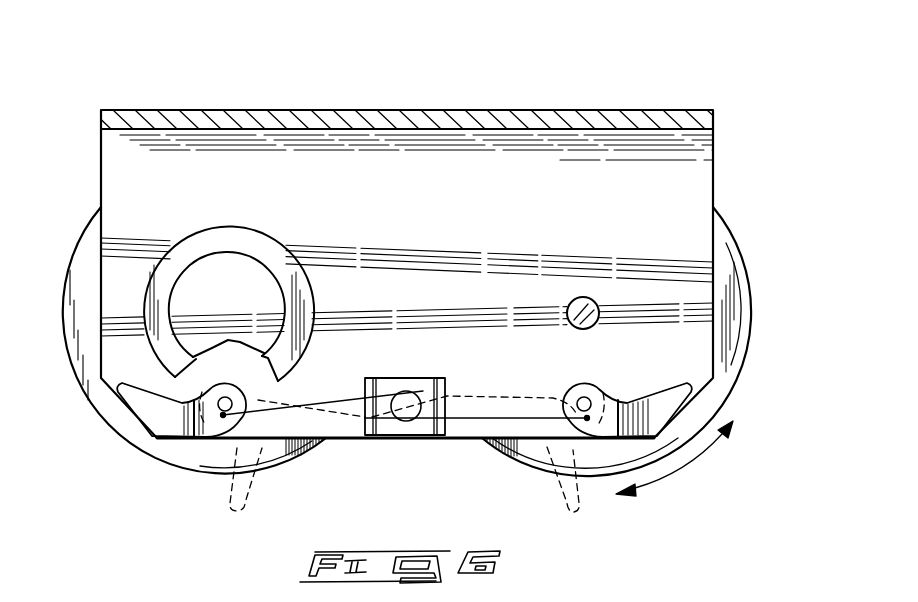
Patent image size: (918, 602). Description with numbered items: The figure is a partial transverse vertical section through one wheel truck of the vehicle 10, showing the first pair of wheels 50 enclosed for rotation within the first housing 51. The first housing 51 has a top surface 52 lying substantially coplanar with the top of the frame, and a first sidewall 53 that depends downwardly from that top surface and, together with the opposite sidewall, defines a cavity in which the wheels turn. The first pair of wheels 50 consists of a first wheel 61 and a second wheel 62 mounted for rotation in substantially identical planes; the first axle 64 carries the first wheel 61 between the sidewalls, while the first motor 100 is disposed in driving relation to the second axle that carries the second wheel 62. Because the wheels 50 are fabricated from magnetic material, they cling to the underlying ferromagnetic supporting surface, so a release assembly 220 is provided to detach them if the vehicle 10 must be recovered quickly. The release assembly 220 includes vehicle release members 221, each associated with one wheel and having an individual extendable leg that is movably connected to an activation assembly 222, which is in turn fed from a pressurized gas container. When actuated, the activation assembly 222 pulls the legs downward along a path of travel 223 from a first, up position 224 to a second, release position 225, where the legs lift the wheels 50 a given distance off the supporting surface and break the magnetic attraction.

The vehicle 10 is at (645, 58).
The first pair of wheels 50 is at (700, 485).
The first housing 51 is at (732, 174).
The top surface 52 is at (441, 110).
The first sidewall 53 is at (388, 216).
The first wheel 61 is at (85, 262).
The second wheel 62 is at (724, 247).
The first axle 64 is at (571, 303).
The first motor 100 is at (258, 224).
The release assembly 220 is at (189, 456).
The vehicle release member 221 is at (148, 398).
The activation assembly 222 is at (383, 425).
The path of travel 223 is at (713, 450).
The up position 224 is at (677, 386).
The release position 225 is at (563, 494).